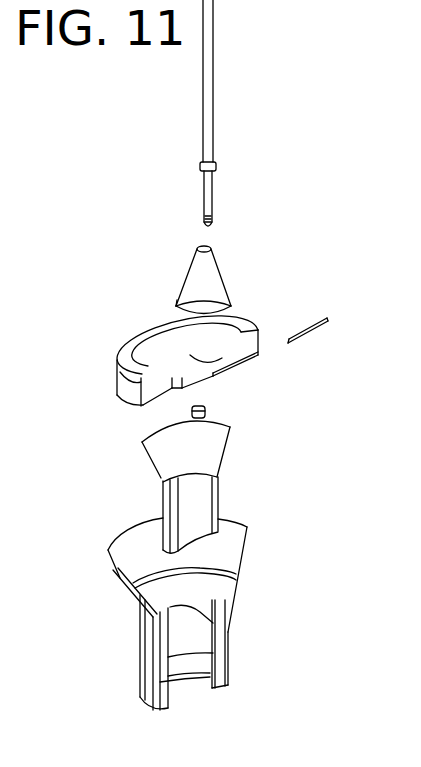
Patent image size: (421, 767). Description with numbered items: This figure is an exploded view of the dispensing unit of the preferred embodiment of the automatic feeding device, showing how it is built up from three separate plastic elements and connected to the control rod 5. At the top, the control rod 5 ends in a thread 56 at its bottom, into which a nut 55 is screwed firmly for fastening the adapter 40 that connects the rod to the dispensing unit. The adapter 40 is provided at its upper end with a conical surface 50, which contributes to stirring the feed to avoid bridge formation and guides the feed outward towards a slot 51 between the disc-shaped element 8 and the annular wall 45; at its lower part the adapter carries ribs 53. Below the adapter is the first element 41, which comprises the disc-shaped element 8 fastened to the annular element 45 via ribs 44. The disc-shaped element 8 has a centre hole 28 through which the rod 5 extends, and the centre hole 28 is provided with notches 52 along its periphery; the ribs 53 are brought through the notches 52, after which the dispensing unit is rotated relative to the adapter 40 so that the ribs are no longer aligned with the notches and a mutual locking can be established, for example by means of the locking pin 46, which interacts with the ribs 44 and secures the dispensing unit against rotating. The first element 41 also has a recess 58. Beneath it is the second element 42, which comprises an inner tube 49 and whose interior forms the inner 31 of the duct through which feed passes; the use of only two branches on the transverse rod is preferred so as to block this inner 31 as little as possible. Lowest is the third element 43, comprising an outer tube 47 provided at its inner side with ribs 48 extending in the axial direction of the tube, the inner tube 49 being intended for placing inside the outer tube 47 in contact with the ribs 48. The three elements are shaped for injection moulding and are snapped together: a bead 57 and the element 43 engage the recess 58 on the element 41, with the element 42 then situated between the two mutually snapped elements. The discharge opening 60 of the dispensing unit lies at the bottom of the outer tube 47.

The control rod 5 is at (214, 182).
The thread 56 is at (215, 222).
The adapter 40 is at (217, 262).
The conical surface 50 is at (196, 272).
The ribs 53 is at (178, 306).
The first element 41 is at (184, 362).
The annular element 45 is at (262, 328).
The notches 52 is at (143, 338).
The slot 51 is at (152, 358).
The ribs 44 is at (156, 418).
The recess 58 is at (262, 366).
The disc-shaped element 8 is at (228, 372).
The centre hole 28 is at (205, 362).
The locking pin 46 is at (318, 336).
The second element 42 is at (176, 479).
The nut 55 is at (205, 413).
The inner tube 49 is at (232, 479).
The inner of the duct 31 is at (196, 507).
The third element 43 is at (188, 631).
The bead 57 is at (256, 530).
The outer tube 47 is at (228, 642).
The discharge opening 60 is at (186, 714).
The ribs 48 is at (200, 623).